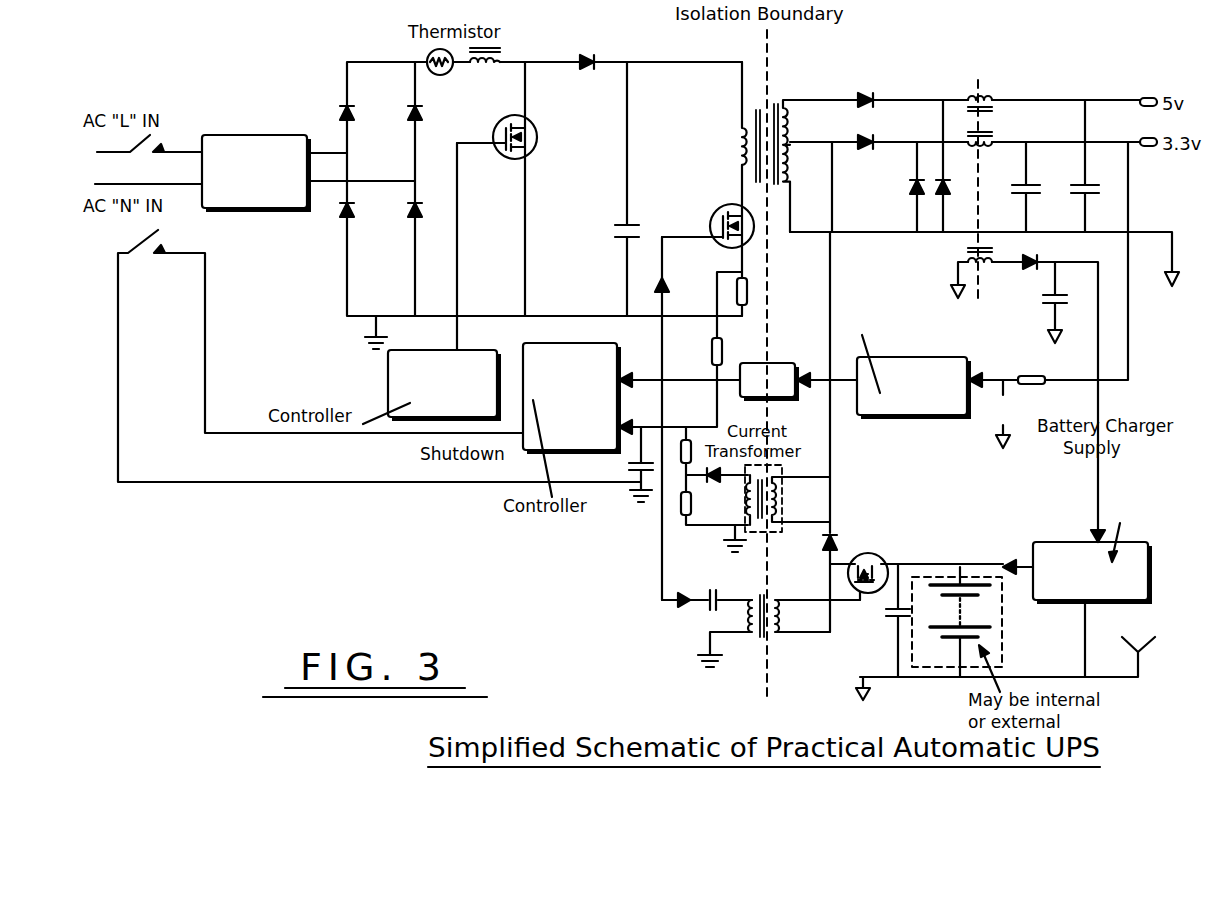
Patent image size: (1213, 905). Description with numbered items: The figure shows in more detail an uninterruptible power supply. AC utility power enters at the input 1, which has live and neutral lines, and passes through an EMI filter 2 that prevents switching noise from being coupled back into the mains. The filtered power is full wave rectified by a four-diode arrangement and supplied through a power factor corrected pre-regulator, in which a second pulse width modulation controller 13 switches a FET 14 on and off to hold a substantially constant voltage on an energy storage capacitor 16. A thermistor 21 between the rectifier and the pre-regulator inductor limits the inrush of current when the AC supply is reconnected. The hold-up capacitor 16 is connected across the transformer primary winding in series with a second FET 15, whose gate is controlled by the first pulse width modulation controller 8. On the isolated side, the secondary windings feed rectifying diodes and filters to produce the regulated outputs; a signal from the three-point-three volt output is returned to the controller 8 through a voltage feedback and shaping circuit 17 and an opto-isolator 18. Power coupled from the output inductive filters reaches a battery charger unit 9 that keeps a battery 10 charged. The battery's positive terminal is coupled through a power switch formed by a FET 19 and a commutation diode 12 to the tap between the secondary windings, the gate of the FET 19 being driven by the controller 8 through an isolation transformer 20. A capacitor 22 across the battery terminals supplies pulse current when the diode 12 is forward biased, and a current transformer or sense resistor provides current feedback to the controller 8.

The input 1 is at (105, 170).
The EMI filter 2 is at (272, 155).
The pulse width modulation controller 8 is at (558, 433).
The battery charger unit 9 is at (1127, 570).
The battery 10 is at (943, 645).
The commutation diode 12 is at (842, 538).
The second pulse width modulation controller 13 is at (393, 386).
The FET 14 is at (535, 145).
The second FET 15 is at (722, 220).
The energy storage capacitor 16 is at (614, 232).
The voltage feedback and shaping circuit 17 is at (895, 402).
The opto-isolator 18 is at (782, 378).
The FET 19 is at (884, 558).
The isolation transformer 20 is at (757, 642).
The thermistor 21 is at (428, 55).
The capacitor 22 is at (880, 622).